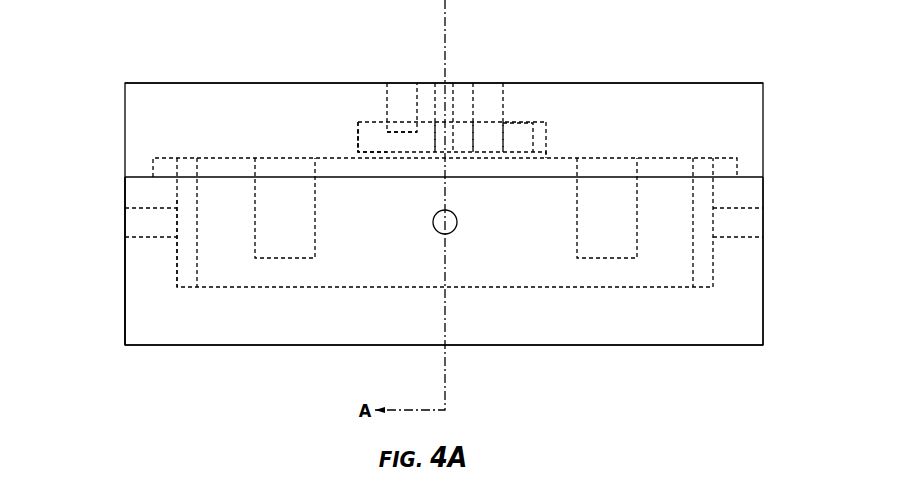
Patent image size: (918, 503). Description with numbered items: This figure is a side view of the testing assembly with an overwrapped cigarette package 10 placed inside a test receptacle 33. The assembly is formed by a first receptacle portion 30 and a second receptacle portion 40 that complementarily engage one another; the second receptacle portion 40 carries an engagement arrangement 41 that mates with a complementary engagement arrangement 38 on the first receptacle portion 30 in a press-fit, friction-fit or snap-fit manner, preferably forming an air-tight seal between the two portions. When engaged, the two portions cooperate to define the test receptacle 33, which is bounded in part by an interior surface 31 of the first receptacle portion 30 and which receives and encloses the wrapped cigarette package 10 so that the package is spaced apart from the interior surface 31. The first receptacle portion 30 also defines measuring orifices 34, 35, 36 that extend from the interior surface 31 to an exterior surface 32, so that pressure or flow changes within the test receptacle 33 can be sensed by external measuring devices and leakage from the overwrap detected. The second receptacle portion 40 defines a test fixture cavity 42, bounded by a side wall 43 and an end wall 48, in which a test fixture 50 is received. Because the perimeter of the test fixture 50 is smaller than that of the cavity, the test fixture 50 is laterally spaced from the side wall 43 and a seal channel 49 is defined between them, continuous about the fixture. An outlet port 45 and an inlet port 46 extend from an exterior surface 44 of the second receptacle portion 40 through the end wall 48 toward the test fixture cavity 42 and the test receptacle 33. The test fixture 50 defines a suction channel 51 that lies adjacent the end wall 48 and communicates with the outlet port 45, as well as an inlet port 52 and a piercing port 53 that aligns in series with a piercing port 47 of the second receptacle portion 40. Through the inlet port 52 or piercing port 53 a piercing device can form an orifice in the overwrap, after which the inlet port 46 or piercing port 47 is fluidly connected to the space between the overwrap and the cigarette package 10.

The cigarette package 10 is at (227, 270).
The first receptacle portion 30 is at (199, 350).
The interior surface 31 is at (185, 288).
The exterior surface 32 is at (125, 256).
The test receptacle 33 is at (178, 256).
The measuring orifice 34 is at (769, 222).
The measuring orifice 35 is at (453, 231).
The measuring orifice 36 is at (153, 220).
The complementary engagement arrangement 38 is at (727, 167).
The second receptacle portion 40 is at (647, 81).
The engagement arrangement 41 is at (742, 162).
The test fixture cavity 42 is at (350, 126).
The side wall 43 is at (349, 147).
The exterior surface 44 is at (720, 82).
The outlet port 45 is at (400, 86).
The inlet port 46 is at (492, 86).
The piercing port 47 is at (452, 86).
The end wall 48 is at (377, 121).
The seal channel 49 is at (350, 136).
The test fixture 50 is at (521, 126).
The suction channel 51 is at (393, 136).
The inlet port 52 is at (487, 142).
The piercing port 53 is at (436, 136).